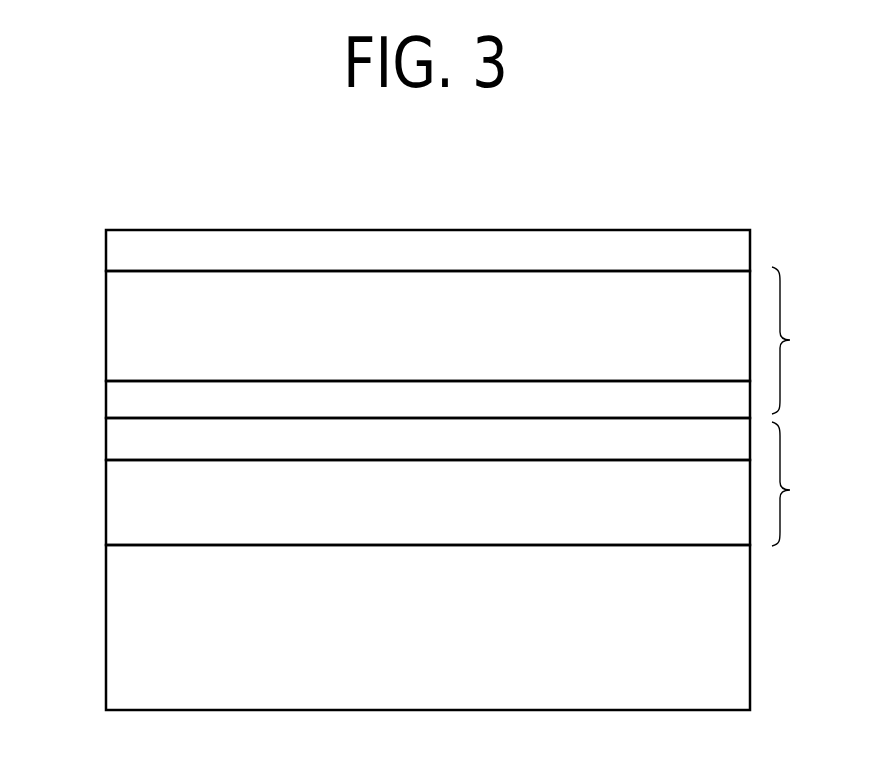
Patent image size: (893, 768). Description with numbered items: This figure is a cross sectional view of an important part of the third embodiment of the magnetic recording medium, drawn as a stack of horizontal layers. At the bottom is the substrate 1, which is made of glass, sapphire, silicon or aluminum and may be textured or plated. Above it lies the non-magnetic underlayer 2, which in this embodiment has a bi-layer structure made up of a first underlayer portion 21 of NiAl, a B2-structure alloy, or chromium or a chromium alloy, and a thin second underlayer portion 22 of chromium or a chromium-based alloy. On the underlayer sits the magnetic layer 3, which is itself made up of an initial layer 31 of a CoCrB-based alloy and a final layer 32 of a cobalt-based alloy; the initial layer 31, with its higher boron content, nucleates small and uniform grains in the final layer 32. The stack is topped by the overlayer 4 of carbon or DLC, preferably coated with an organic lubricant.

The substrate 1 is at (738, 618).
The non-magnetic underlayer 2 is at (796, 484).
The first underlayer portion 21 is at (121, 507).
The second underlayer portion 22 is at (121, 437).
The magnetic layer 3 is at (796, 340).
The initial layer 31 is at (121, 402).
The final layer 32 is at (121, 321).
The overlayer 4 is at (737, 248).